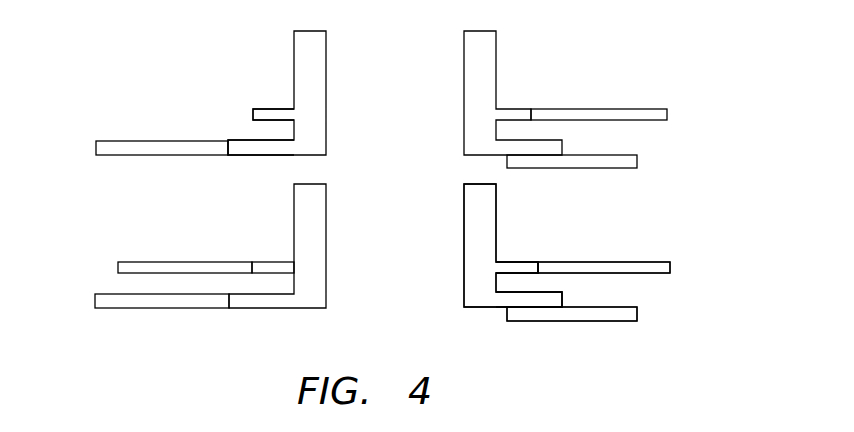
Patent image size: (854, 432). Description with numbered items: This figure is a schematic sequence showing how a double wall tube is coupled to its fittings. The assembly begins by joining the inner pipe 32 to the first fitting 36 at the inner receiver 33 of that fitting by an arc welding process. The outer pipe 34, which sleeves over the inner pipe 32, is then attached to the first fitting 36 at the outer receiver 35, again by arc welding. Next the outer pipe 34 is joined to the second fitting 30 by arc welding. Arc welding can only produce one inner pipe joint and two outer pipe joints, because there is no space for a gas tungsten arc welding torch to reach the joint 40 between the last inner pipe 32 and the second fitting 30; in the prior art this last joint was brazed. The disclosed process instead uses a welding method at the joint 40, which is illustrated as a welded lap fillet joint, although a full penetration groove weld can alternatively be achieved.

The second fitting 30 is at (497, 67).
The inner pipe 32 is at (109, 157).
The inner receiver 33 is at (268, 157).
The outer pipe 34 is at (146, 262).
The outer receiver 35 is at (267, 108).
The first fitting 36 is at (327, 67).
The joint 40 is at (490, 318).